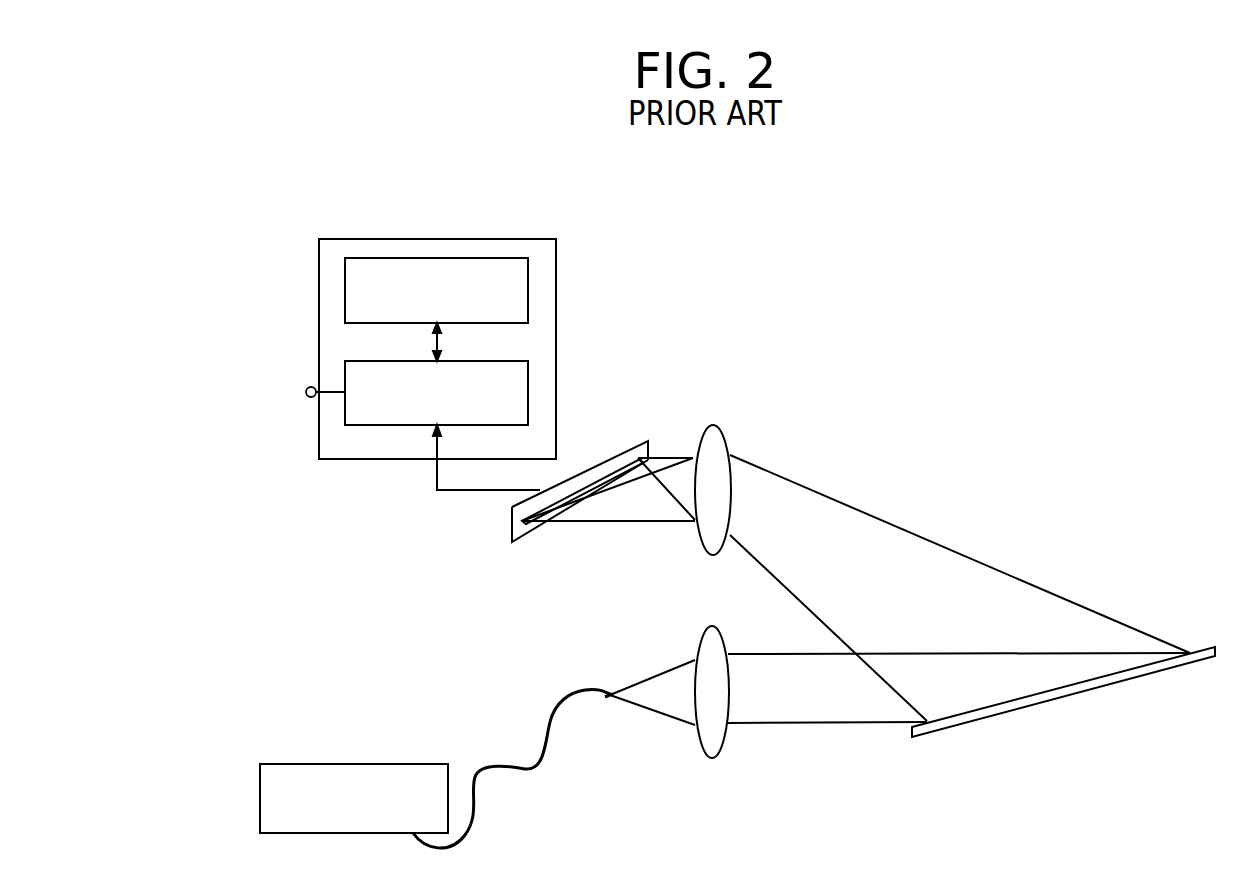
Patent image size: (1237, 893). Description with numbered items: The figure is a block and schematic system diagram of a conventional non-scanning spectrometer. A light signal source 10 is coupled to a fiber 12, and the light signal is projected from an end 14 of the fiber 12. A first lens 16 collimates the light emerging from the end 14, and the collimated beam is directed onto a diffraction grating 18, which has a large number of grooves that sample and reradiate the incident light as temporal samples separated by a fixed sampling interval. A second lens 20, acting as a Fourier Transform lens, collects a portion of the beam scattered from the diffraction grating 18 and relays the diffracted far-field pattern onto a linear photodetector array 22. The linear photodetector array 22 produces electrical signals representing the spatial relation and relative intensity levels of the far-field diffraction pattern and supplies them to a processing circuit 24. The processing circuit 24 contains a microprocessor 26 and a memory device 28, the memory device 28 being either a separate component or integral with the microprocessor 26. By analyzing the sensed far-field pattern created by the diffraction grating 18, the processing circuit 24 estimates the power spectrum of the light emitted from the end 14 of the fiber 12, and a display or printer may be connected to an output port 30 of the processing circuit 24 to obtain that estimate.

The light signal source 10 is at (310, 764).
The fiber 12 is at (560, 698).
The end of fiber 14 is at (612, 700).
The first lens 16 is at (712, 760).
The diffraction grating 18 is at (1102, 687).
The second lens 20 is at (723, 430).
The linear photodetector array 22 is at (612, 454).
The processing circuit 24 is at (453, 239).
The microprocessor 26 is at (528, 373).
The memory device 28 is at (345, 278).
The output port 30 is at (306, 390).